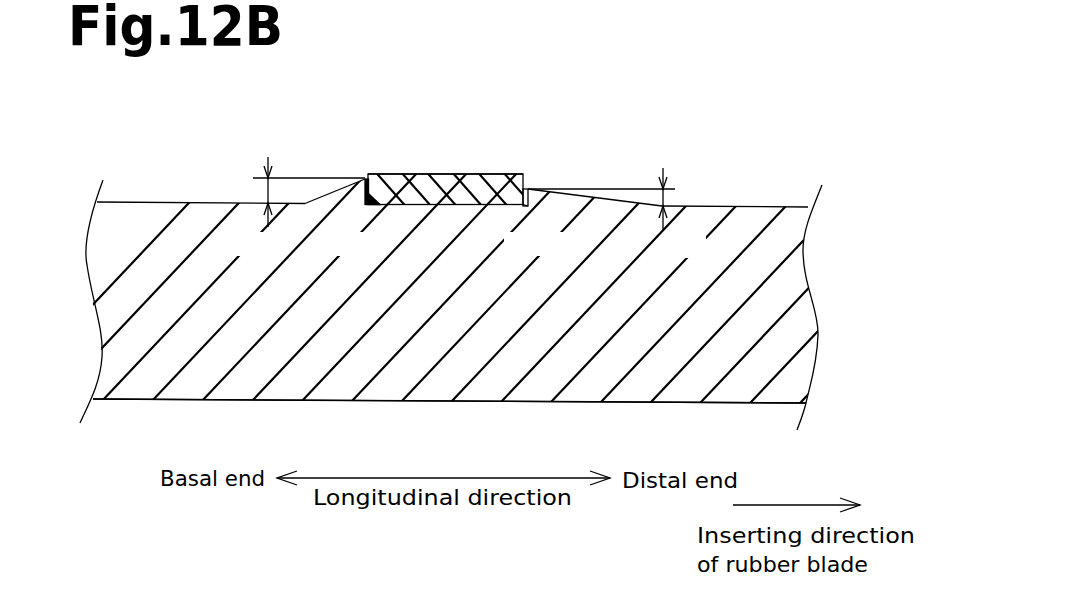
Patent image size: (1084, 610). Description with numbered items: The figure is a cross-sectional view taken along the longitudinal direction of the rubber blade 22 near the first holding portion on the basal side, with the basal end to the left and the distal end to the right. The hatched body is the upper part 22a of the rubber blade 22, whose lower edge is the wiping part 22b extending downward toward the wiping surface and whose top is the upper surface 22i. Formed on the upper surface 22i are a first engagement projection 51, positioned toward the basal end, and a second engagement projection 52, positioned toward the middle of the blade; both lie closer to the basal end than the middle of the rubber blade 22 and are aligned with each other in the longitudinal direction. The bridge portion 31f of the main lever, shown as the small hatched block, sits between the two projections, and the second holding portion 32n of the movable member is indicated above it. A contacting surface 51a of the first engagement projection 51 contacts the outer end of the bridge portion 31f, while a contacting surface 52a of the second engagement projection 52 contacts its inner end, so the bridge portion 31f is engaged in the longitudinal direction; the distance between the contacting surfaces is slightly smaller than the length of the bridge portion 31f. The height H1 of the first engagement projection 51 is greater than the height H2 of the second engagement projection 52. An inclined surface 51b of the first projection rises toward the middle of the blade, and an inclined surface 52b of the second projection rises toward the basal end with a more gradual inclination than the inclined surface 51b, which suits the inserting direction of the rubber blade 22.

The rubber blade 22 is at (730, 404).
The upper part 22a is at (110, 202).
The wiping part 22b is at (570, 404).
The upper surface 22i is at (777, 206).
The bridge portion 31f is at (440, 180).
The second holding portion 32n is at (487, 174).
The first engagement projection 51 is at (357, 179).
The contacting surface 51a is at (368, 206).
The inclined surface 51b is at (307, 197).
The second engagement projection 52 is at (527, 189).
The contacting surface 52a is at (520, 207).
The inclined surface 52b is at (620, 198).
The height of first engagement projection H1 is at (254, 195).
The height of second engagement projection H2 is at (668, 200).